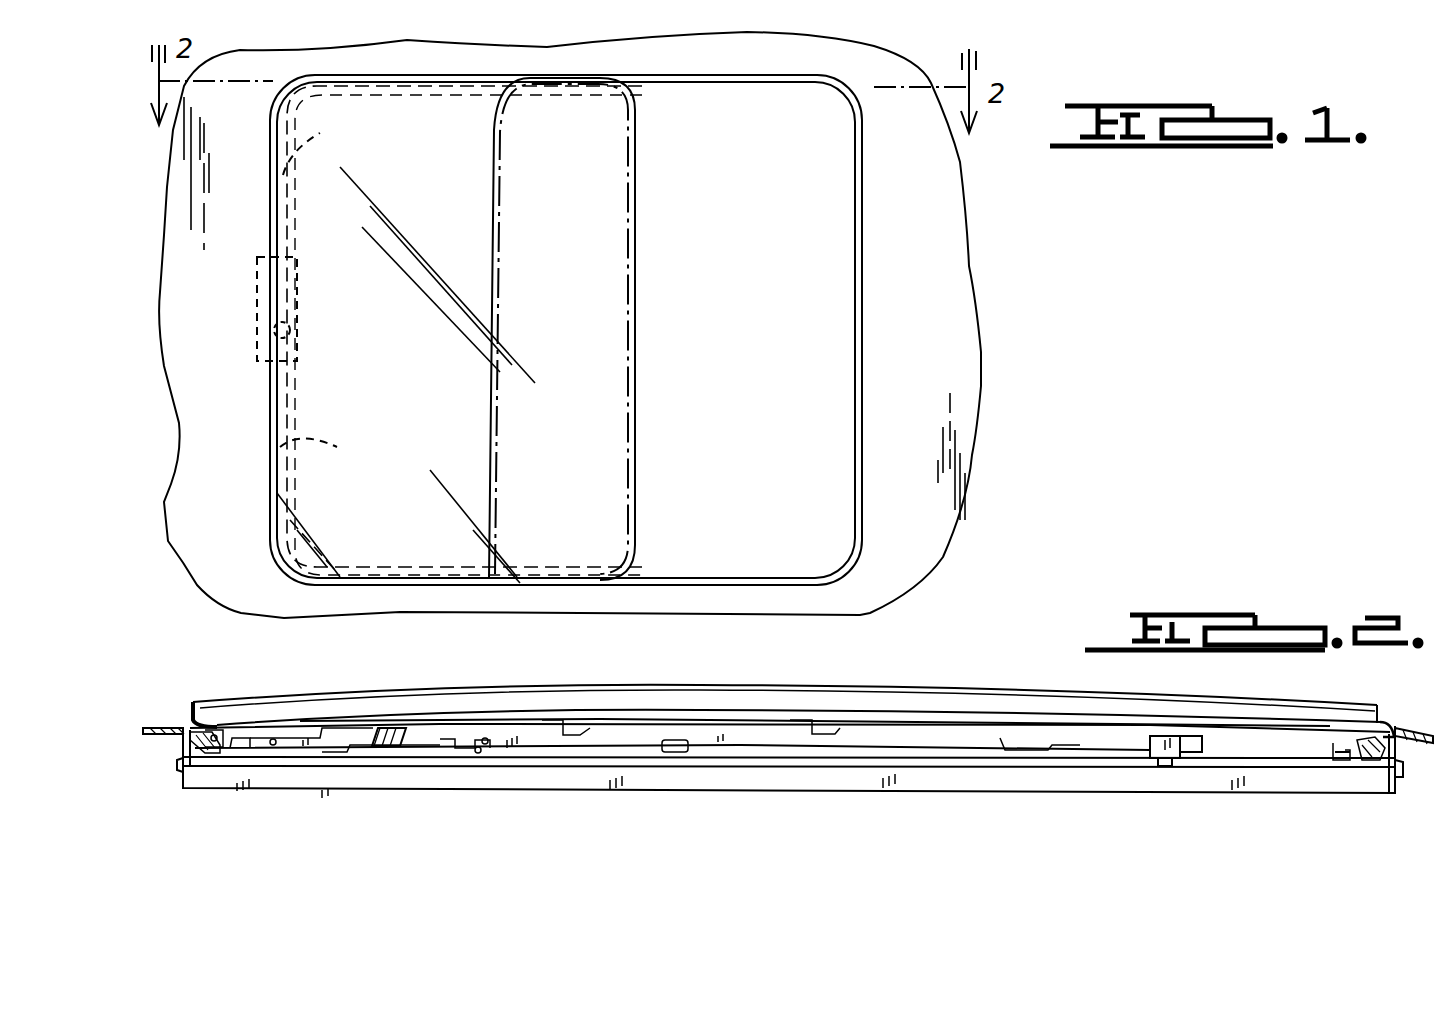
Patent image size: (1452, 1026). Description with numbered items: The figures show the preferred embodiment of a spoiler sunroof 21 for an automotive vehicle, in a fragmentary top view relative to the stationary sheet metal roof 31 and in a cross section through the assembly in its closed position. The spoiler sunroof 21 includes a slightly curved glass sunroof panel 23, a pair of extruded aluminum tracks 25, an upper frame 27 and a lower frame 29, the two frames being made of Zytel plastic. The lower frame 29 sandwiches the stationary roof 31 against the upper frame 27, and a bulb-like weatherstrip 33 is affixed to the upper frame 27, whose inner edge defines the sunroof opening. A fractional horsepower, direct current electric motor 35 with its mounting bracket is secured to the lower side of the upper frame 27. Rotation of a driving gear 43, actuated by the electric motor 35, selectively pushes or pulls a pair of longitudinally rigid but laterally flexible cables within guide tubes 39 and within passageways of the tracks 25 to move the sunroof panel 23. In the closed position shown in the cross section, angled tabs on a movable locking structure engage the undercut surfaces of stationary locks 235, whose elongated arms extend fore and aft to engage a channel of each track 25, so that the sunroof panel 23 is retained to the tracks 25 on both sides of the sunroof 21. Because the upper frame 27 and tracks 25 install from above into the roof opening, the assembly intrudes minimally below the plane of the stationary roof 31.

In FIG. 1, the spoiler sunroof 21 is at (672, 156).
In FIG. 2, the spoiler sunroof 21 is at (650, 800).
In FIG. 1, the sunroof panel 23 is at (408, 377).
In FIG. 2, the sunroof panel 23 is at (718, 702).
In FIG. 1, the tracks 25 is at (410, 75).
In FIG. 2, the tracks 25 is at (778, 786).
In FIG. 2, the upper frame 27 is at (187, 724).
In FIG. 2, the lower frame 29 is at (180, 765).
In FIG. 1, the stationary roof 31 is at (945, 276).
In FIG. 2, the stationary roof 31 is at (158, 726).
In FIG. 2, the weatherstrip 33 is at (1363, 753).
In FIG. 1, the electric motor 35 is at (257, 295).
In FIG. 1, the guide tubes 39 is at (322, 293).
In FIG. 1, the driving gear 43 is at (272, 332).
In FIG. 2, the stationary locks 235 is at (380, 728).